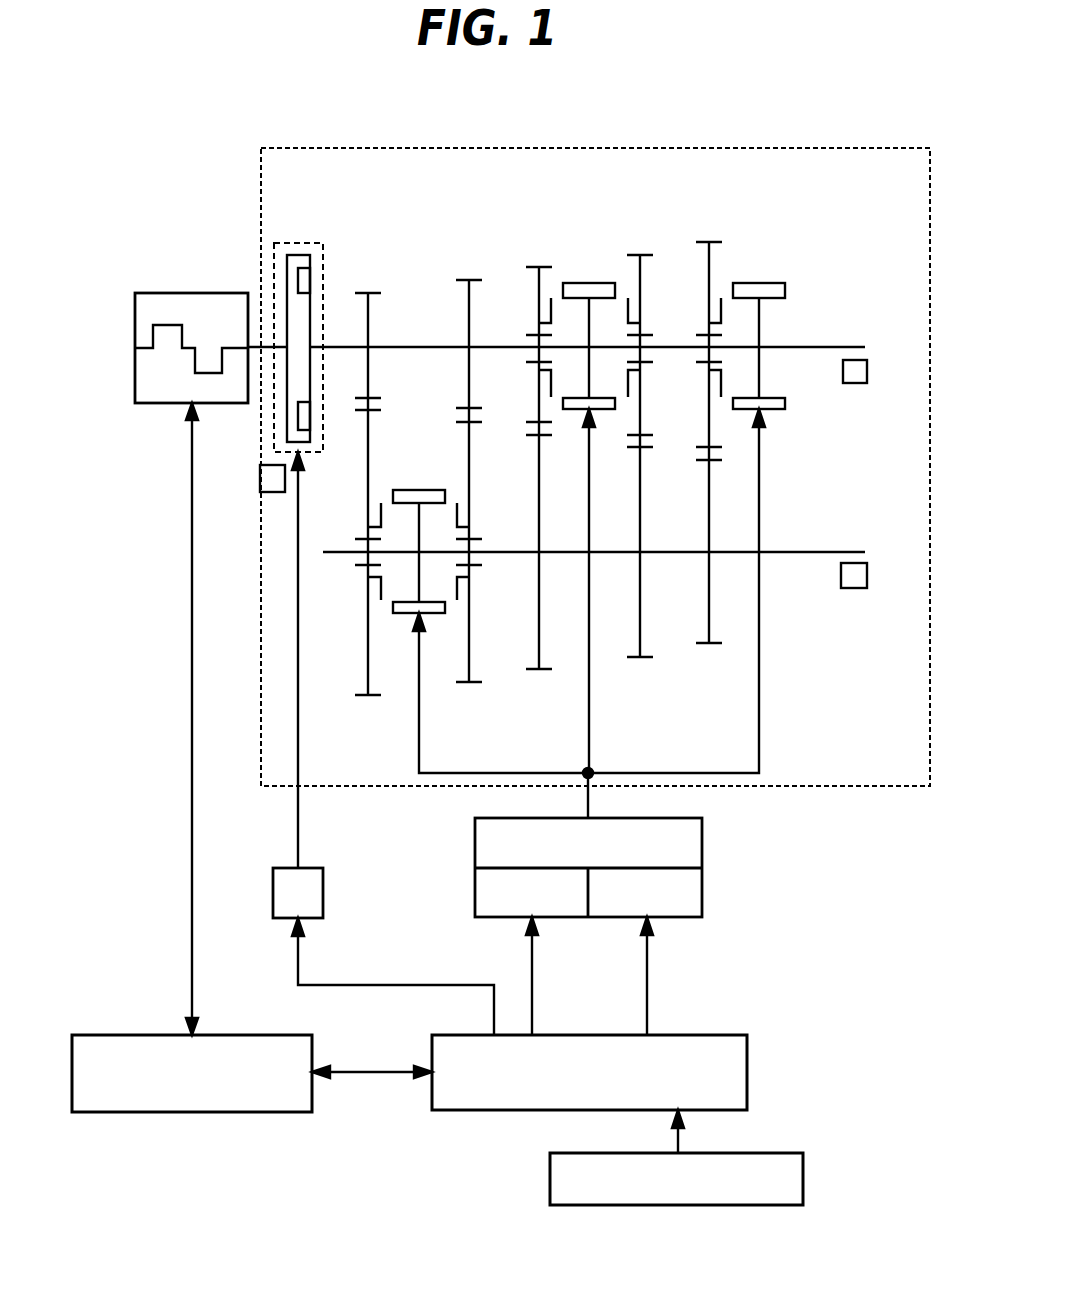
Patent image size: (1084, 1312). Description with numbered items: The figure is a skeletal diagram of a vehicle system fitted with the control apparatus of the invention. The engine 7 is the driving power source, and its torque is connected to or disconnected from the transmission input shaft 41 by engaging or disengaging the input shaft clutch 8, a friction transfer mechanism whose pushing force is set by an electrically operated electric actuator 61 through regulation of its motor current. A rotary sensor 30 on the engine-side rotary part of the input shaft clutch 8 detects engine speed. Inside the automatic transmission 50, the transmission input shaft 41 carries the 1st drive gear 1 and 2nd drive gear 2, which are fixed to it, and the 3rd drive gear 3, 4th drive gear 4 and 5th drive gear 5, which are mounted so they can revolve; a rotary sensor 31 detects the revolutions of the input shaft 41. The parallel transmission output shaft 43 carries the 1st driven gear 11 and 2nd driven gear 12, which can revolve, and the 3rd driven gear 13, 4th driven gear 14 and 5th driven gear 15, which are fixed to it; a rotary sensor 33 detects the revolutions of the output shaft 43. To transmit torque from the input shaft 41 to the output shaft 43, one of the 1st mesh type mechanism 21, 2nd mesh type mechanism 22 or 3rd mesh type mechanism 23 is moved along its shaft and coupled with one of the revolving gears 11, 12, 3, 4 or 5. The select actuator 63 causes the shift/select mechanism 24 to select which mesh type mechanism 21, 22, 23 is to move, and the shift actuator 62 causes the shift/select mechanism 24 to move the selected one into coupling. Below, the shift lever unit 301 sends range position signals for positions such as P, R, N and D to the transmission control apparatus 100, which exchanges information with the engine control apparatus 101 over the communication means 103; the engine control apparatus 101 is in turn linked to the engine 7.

The 1st drive gear 1 is at (370, 293).
The 2nd drive gear 2 is at (470, 280).
The 3rd drive gear 3 is at (540, 267).
The 4th drive gear 4 is at (641, 255).
The 5th drive gear 5 is at (710, 242).
The engine 7 is at (187, 292).
The input shaft clutch 8 is at (290, 243).
The 1st driven gear 11 is at (368, 695).
The 2nd driven gear 12 is at (468, 682).
The 3rd driven gear 13 is at (538, 669).
The 4th driven gear 14 is at (640, 657).
The 5th driven gear 15 is at (708, 643).
The 1st mesh type mechanism 21 is at (420, 490).
The 2nd mesh type mechanism 22 is at (590, 283).
The 3rd mesh type mechanism 23 is at (760, 283).
The shift/select mechanism 24 is at (702, 843).
The rotary sensor 30 is at (268, 492).
The rotary sensor 31 is at (855, 383).
The rotary sensor 33 is at (855, 588).
The transmission input shaft 41 is at (865, 347).
The transmission output shaft 43 is at (833, 548).
The automatic transmission 50 is at (845, 148).
The electric actuator 61 is at (323, 890).
The shift actuator 62 is at (560, 917).
The select actuator 63 is at (673, 917).
The transmission control apparatus 100 is at (678, 1035).
The engine control apparatus 101 is at (232, 1035).
The communication means 103 is at (365, 1072).
The shift lever unit 301 is at (730, 1153).